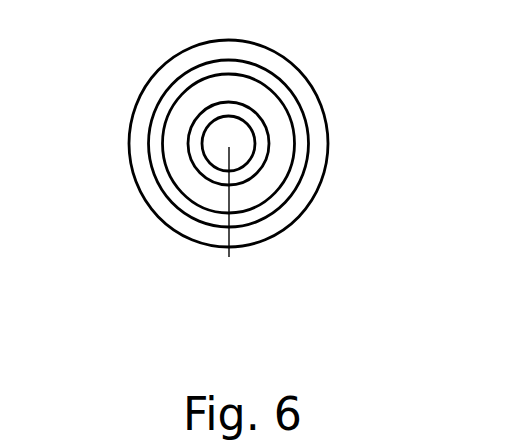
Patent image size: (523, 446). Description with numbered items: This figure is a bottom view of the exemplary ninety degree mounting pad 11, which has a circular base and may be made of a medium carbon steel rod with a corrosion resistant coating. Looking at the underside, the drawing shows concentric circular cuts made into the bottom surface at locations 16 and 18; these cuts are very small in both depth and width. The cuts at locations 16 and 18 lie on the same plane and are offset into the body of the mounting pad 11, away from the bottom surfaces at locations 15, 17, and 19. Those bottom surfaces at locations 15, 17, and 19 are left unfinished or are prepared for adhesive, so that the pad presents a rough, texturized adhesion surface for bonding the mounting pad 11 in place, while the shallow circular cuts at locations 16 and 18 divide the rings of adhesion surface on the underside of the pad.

The 90 degree mounting pad 11 is at (295, 222).
The bottom surface location 15 is at (317, 118).
The circular cut 16 is at (155, 122).
The bottom surface location 17 is at (177, 165).
The circular cut 18 is at (203, 172).
The bottom surface location 19 is at (215, 220).